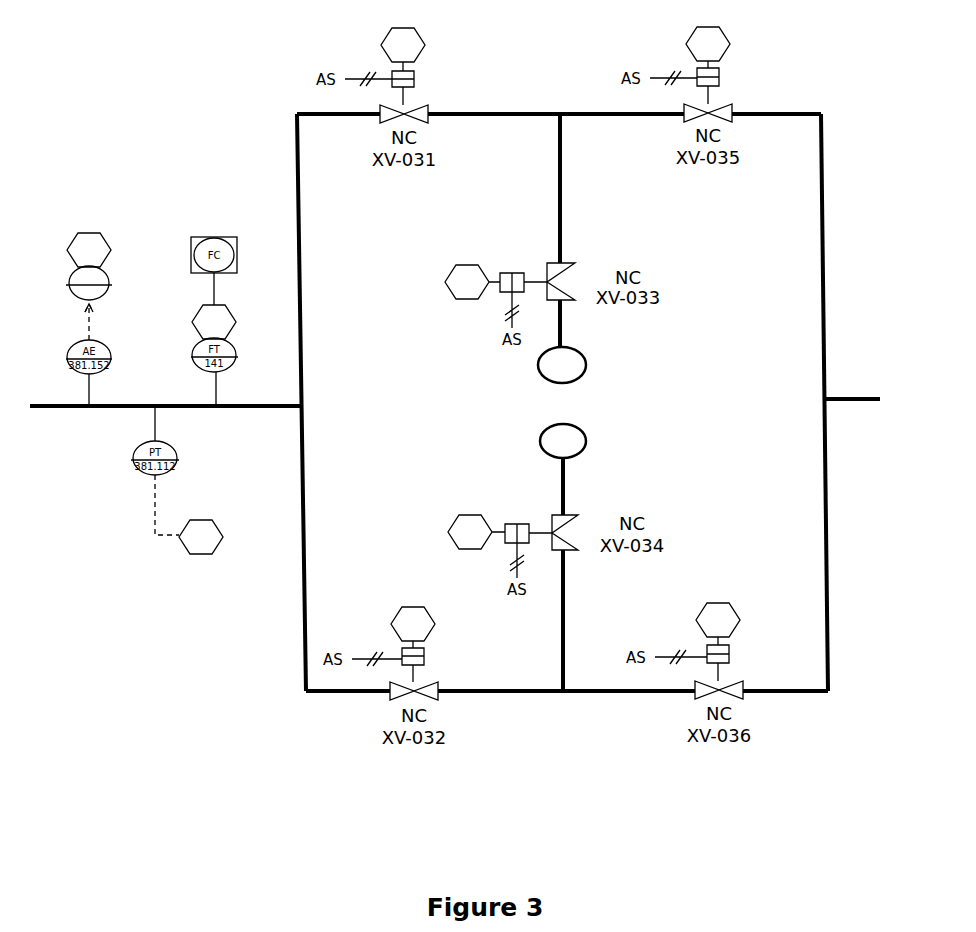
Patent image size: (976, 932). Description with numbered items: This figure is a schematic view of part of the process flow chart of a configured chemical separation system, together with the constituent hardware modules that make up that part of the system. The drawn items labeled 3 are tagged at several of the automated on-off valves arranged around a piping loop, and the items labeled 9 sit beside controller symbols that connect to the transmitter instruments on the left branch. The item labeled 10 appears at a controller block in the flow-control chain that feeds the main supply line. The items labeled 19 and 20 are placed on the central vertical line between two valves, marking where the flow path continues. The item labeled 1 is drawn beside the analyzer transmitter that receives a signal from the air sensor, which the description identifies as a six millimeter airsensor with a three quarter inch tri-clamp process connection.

The air supply solenoid valve (ASI) 3 is at (557, 352).
The unit controller (UUC) 9 is at (162, 394).
The pressure controller (PB) 10 is at (207, 321).
The line connector 19 is at (562, 365).
The line connector 20 is at (563, 441).
The analyzer transmitter (AT) 1 is at (94, 286).